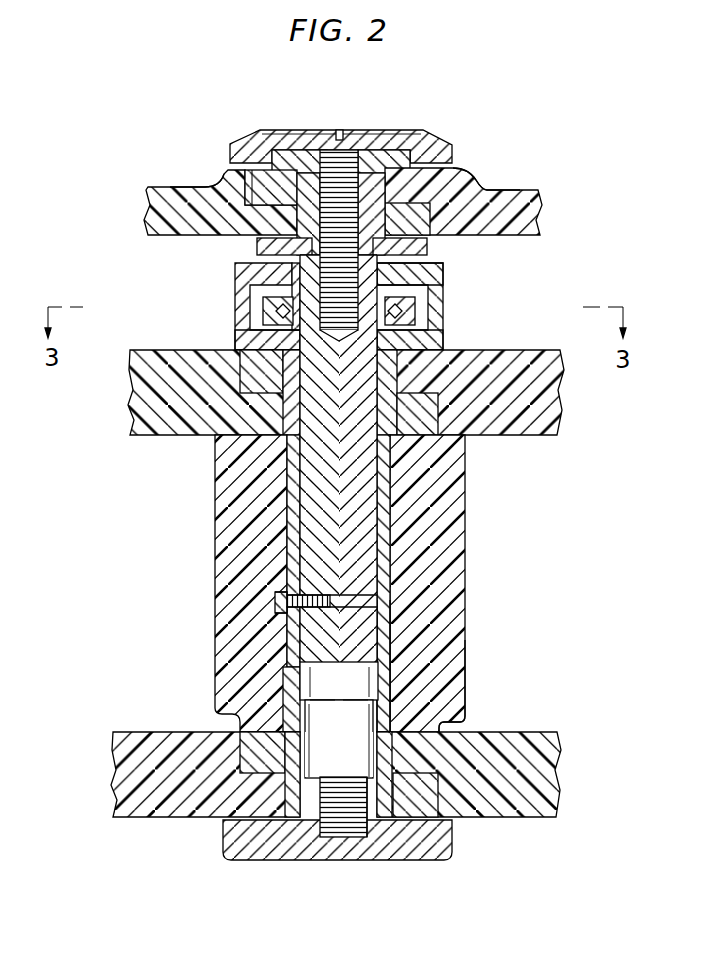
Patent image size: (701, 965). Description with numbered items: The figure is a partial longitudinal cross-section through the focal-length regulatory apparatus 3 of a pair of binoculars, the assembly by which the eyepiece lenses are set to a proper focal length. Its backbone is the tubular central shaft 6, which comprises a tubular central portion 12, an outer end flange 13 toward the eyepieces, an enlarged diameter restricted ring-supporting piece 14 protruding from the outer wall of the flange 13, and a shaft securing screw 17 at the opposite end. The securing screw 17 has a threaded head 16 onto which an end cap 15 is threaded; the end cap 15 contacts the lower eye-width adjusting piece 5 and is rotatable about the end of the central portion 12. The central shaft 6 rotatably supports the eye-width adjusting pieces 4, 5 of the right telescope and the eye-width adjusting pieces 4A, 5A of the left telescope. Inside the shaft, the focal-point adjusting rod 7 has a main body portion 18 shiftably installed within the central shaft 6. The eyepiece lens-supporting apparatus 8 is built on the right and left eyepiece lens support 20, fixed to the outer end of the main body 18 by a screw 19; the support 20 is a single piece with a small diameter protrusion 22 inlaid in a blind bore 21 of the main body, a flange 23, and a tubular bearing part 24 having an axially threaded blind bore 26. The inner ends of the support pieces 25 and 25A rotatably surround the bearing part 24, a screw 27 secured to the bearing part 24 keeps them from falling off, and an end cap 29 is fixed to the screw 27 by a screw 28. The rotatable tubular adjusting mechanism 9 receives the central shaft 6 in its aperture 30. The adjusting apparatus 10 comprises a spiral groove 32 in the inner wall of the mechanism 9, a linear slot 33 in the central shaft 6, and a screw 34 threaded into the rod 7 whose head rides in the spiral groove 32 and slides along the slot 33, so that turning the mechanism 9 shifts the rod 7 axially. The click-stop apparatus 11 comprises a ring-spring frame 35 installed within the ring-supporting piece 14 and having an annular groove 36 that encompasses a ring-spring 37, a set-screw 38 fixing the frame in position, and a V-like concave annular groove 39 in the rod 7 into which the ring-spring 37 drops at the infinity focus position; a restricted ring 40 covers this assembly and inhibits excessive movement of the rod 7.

The focal-length regulatory apparatus 3 is at (383, 120).
The screw 19 is at (410, 160).
The end cap 29 is at (268, 142).
The screw 27 is at (292, 152).
The screw 28 is at (325, 142).
The axially threaded blind bore 26 is at (352, 160).
The right and left eyepiece lens support 20 is at (185, 200).
The tubular bearing part 24 is at (262, 185).
The eyepiece lens-supporting apparatus 8 is at (472, 190).
The support piece 25 is at (165, 212).
The support piece 25A is at (540, 218).
The flange 23 is at (258, 248).
The blind bore 21 is at (380, 258).
The small diameter protrusion 22 is at (236, 263).
The ring-spring 37 is at (256, 288).
The set-screw 38 is at (265, 320).
The restricted ring 40 is at (262, 310).
The click-stop apparatus 11 is at (440, 293).
The concave annular groove 39 is at (432, 282).
The ring-spring frame 35 is at (432, 306).
The annular groove 36 is at (432, 318).
The outer end flange 13 is at (246, 339).
The restricted ring-supporting piece 14 is at (430, 338).
The eye-width adjusting piece 4 is at (135, 388).
The eye-width adjusting piece 4A is at (545, 393).
The main body portion 18 is at (270, 480).
The rotatable tubular adjusting mechanism 9 is at (435, 570).
The aperture 30 is at (440, 660).
The linear slot 33 is at (290, 540).
The tubular central shaft 6 is at (386, 535).
The tubular central portion 12 is at (388, 635).
The focal-point adjusting rod 7 is at (350, 496).
The adjusting apparatus 10 is at (275, 598).
The spiral groove 32 is at (280, 590).
The screw 34 is at (280, 610).
The eye-width adjusting piece 5 is at (120, 773).
The eye-width adjusting piece 5A is at (540, 775).
The threaded head 16 is at (290, 858).
The end cap 15 is at (335, 848).
The shaft securing screw 17 is at (373, 760).